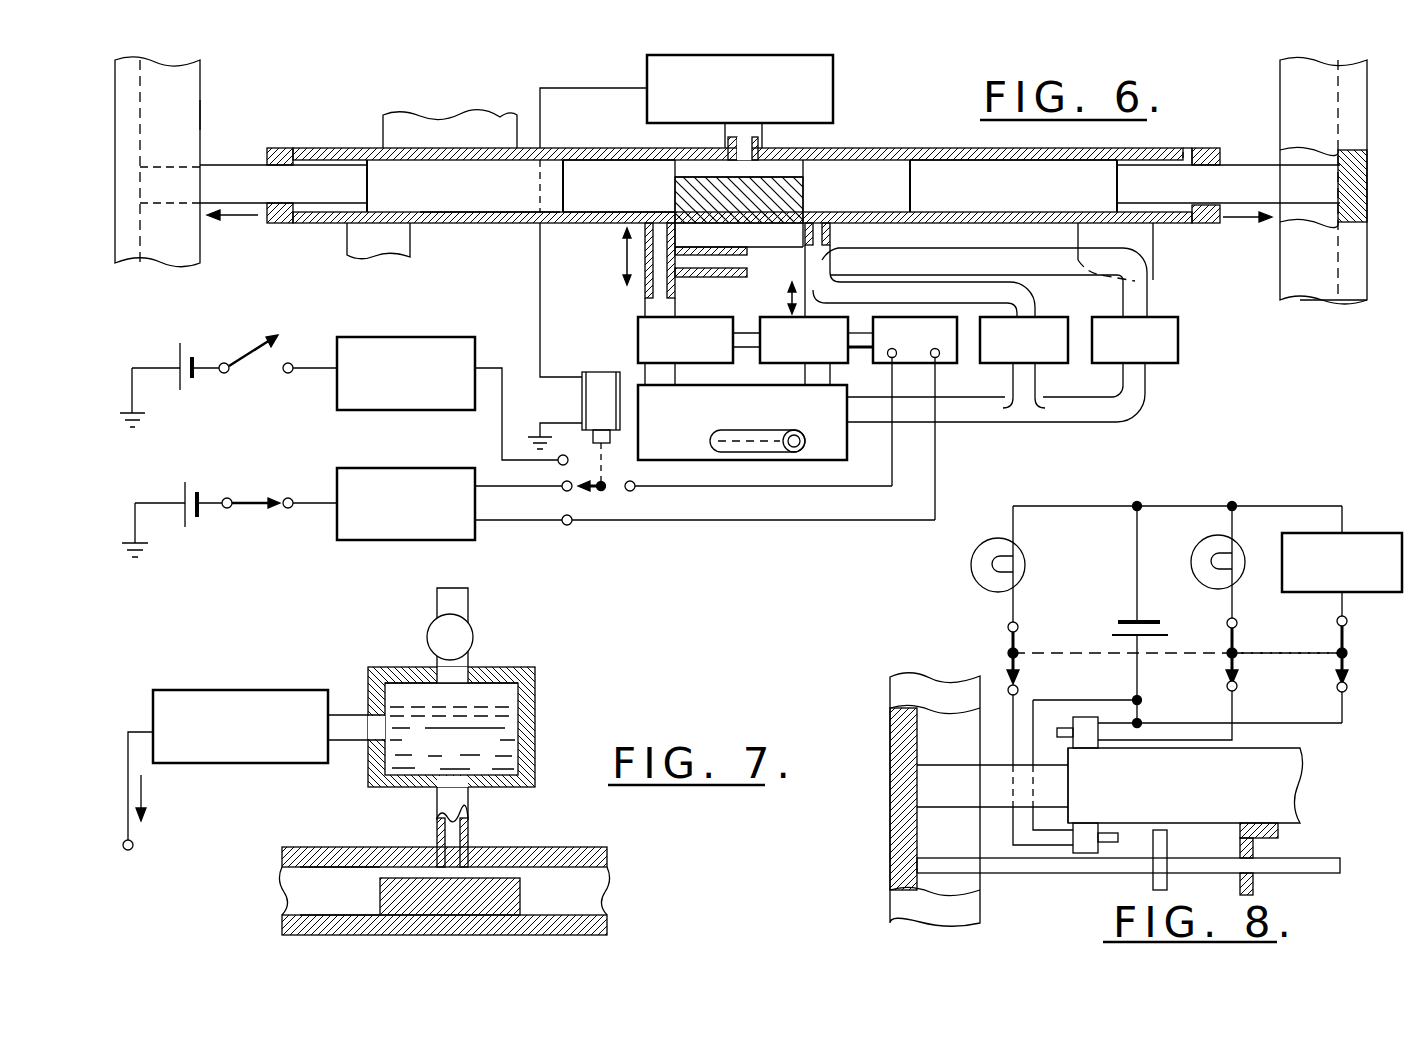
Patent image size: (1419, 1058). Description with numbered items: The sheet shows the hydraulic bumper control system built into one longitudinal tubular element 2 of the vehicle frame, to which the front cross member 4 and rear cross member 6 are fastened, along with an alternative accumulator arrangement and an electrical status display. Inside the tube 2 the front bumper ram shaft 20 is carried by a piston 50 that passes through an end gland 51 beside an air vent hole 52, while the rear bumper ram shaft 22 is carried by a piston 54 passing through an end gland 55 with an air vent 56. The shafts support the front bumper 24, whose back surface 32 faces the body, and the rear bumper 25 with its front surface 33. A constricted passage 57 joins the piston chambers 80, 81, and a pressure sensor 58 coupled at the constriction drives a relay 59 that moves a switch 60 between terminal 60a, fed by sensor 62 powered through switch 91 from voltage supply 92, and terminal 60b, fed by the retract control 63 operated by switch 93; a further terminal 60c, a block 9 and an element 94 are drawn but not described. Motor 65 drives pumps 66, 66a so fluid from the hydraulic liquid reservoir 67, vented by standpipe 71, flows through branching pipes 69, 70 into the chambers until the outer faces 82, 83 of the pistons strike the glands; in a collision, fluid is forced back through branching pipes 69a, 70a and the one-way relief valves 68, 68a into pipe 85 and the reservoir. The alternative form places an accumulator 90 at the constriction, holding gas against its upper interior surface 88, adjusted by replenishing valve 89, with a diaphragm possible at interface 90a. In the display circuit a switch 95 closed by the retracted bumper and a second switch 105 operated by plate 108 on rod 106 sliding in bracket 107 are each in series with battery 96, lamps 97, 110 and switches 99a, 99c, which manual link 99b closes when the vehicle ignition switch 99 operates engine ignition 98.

In FIG. 6, the longitudinal tubular element 2 is at (756, 159).
In FIG. 7, the longitudinal tubular element 2 is at (444, 879).
In FIG. 8, the longitudinal tubular element 2 is at (1206, 785).
In FIG. 6, the strengthening cross member 4 is at (378, 256).
In FIG. 6, the rear cross member 6 is at (1170, 251).
In FIG. 6, the mounting block 9 is at (450, 108).
In FIG. 6, the front bumper ram shaft 20 is at (283, 163).
In FIG. 8, the front bumper ram shaft 20 is at (952, 786).
In FIG. 6, the rear bumper ram shaft 22 is at (1228, 163).
In FIG. 6, the front bumper 24 is at (157, 182).
In FIG. 8, the front bumper 24 is at (908, 800).
In FIG. 6, the rear bumper 25 is at (1333, 323).
In FIG. 6, the back surface of front bumper 32 is at (219, 111).
In FIG. 8, the back surface of front bumper 32 is at (955, 812).
In FIG. 6, the front surface of rear bumper 33 is at (1297, 180).
In FIG. 6, the piston 50 is at (490, 237).
In FIG. 6, the end gland 51 is at (284, 234).
In FIG. 8, the end gland 51 is at (1098, 785).
In FIG. 6, the air vent hole 52 is at (293, 137).
In FIG. 6, the piston 54 is at (1013, 143).
In FIG. 6, the end gland 55 is at (1204, 130).
In FIG. 6, the air vent 56 is at (1158, 141).
In FIG. 6, the constricted passage 57 is at (769, 184).
In FIG. 7, the constricted passage 57 is at (474, 827).
In FIG. 6, the pressure sensor 58 is at (695, 215).
In FIG. 7, the pressure sensor 58 is at (244, 782).
In FIG. 6, the electrical relay 59 is at (574, 411).
In FIG. 6, the switch 60 is at (735, 501).
In FIG. 6, the terminal 60a is at (523, 498).
In FIG. 6, the terminal 60b is at (537, 471).
In FIG. 6, the contact terminal 60c is at (705, 536).
In FIG. 6, the sensor 62 is at (384, 485).
In FIG. 6, the retract control 63 is at (425, 380).
In FIG. 6, the electrical motor 65 is at (915, 418).
In FIG. 6, the pump 66 is at (671, 345).
In FIG. 6, the pump 66a is at (804, 336).
In FIG. 6, the hydraulic liquid reservoir 67 is at (757, 422).
In FIG. 6, the one-way relief valve 68 is at (985, 346).
In FIG. 6, the one-way relief valve 68a is at (1164, 340).
In FIG. 6, the branching pipe 69 is at (665, 270).
In FIG. 6, the branching pipe 69a is at (1066, 252).
In FIG. 6, the branching pipe 70 is at (976, 270).
In FIG. 6, the branching pipe 70a is at (911, 272).
In FIG. 6, the standpipe 71 is at (753, 458).
In FIG. 6, the piston chamber 80 is at (619, 163).
In FIG. 7, the piston chamber 80 is at (340, 861).
In FIG. 6, the piston chamber 81 is at (935, 186).
In FIG. 7, the piston chamber 81 is at (521, 896).
In FIG. 6, the outer face of piston 82 is at (465, 186).
In FIG. 6, the outer face of piston 83 is at (1078, 186).
In FIG. 6, the pipe 85 is at (996, 409).
In FIG. 7, the upper interior surface of tank 88 is at (479, 648).
In FIG. 7, the replenishing valve 89 is at (475, 633).
In FIG. 7, the accumulator 90 is at (473, 740).
In FIG. 7, the interface 90a is at (485, 738).
In FIG. 6, the switch 91 is at (257, 484).
In FIG. 6, the voltage supply 92 is at (172, 500).
In FIG. 6, the switch 93 is at (256, 369).
In FIG. 6, the battery 94 is at (169, 370).
In FIG. 8, the switch 95 is at (1089, 746).
In FIG. 8, the battery 96 is at (1187, 617).
In FIG. 8, the indicator lamp 97 is at (1200, 562).
In FIG. 8, the engine ignition 98 is at (1342, 549).
In FIG. 8, the vehicle ignition switch 99 is at (1367, 669).
In FIG. 8, the switch 99a is at (1201, 679).
In FIG. 8, the manual link 99b is at (1287, 631).
In FIG. 8, the switch 99c is at (1043, 728).
In FIG. 8, the second switch 105 is at (1101, 860).
In FIG. 8, the rod 106 is at (1128, 884).
In FIG. 8, the bracket 107 is at (1295, 863).
In FIG. 8, the plate 108 is at (1185, 859).
In FIG. 8, the indicator lamp 110 is at (972, 564).